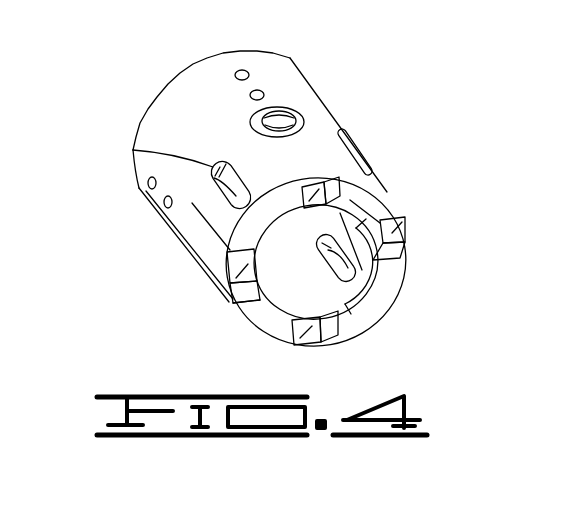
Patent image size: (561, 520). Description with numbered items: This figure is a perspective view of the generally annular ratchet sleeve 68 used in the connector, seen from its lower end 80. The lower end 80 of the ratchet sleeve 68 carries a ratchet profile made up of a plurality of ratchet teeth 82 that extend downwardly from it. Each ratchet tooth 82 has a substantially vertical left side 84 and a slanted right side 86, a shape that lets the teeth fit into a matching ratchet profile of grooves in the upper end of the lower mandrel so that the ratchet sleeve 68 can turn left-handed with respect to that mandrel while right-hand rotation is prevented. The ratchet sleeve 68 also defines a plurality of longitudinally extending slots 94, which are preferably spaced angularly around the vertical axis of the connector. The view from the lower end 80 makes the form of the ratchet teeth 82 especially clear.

The ratchet sleeve 68 is at (356, 110).
The lower end of ratchet sleeve 80 is at (372, 195).
The ratchet teeth 82 is at (356, 167).
The vertical left side 84 is at (372, 292).
The slanted right side 86 is at (305, 343).
The longitudinally extending slots 94 is at (133, 151).